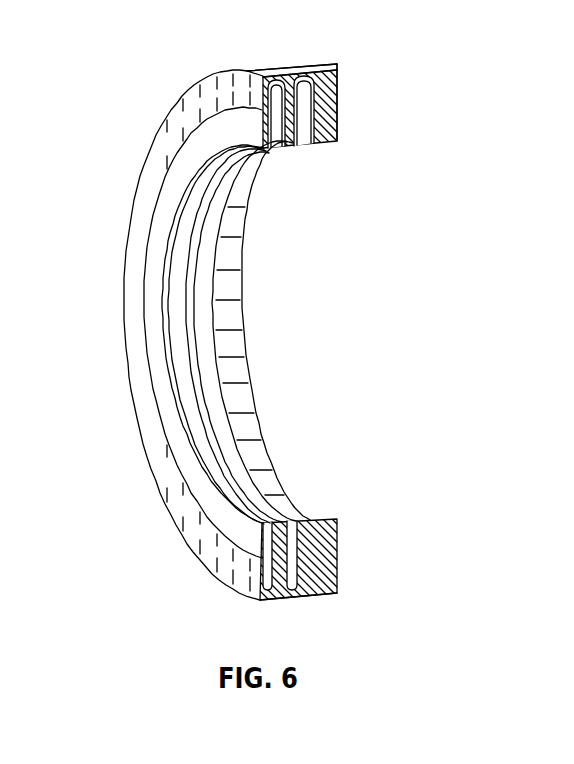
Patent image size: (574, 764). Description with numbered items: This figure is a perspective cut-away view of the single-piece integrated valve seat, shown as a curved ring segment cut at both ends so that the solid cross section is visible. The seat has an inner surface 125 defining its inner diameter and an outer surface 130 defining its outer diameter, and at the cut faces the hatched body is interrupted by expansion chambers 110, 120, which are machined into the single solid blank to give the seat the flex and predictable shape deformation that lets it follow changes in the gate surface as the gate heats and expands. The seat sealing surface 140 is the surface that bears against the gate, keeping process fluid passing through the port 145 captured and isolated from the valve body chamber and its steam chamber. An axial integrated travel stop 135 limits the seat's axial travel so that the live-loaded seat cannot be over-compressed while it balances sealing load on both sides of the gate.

The expansion chamber 110 is at (328, 131).
The expansion chamber 120 is at (296, 143).
The inner surface 125 is at (248, 430).
The outer surface 130 is at (302, 604).
The axial integrated travel stop 135 is at (286, 61).
The seat sealing surface 140 is at (150, 386).
The port 145 is at (350, 119).